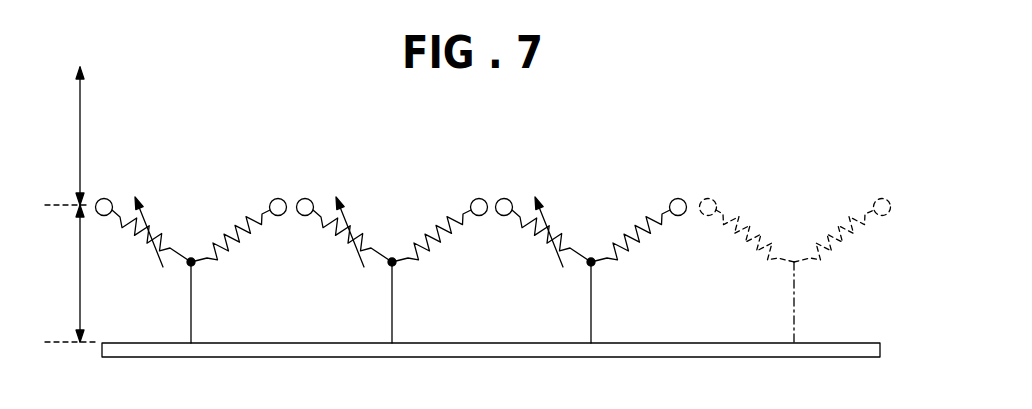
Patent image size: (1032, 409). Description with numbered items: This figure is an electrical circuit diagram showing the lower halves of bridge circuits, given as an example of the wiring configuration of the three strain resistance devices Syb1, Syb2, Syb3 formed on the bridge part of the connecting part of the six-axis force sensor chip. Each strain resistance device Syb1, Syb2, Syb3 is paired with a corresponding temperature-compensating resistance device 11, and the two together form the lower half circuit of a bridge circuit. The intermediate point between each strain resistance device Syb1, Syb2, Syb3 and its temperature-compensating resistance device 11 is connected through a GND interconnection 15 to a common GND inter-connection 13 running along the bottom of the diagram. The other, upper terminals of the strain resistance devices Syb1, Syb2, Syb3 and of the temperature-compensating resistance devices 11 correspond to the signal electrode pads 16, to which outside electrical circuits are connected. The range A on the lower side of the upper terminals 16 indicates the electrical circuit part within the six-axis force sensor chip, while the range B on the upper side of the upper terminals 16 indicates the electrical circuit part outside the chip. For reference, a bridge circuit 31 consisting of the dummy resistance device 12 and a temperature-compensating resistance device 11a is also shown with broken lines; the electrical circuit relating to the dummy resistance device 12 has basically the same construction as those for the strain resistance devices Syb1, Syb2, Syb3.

The temperature-compensating resistance device 11 is at (242, 237).
The temperature-compensating resistance device 11a is at (852, 247).
The dummy resistance device 12 is at (742, 245).
The GND inter-connection 13 is at (823, 353).
The GND interconnection 15 is at (191, 326).
The signal electrode pad 16 is at (104, 198).
The bridge circuit 31 is at (796, 230).
The strain resistance device Syb1 is at (140, 238).
The strain resistance device Syb2 is at (341, 238).
The strain resistance device Syb3 is at (540, 238).
The range A is at (78, 272).
The range B is at (78, 144).